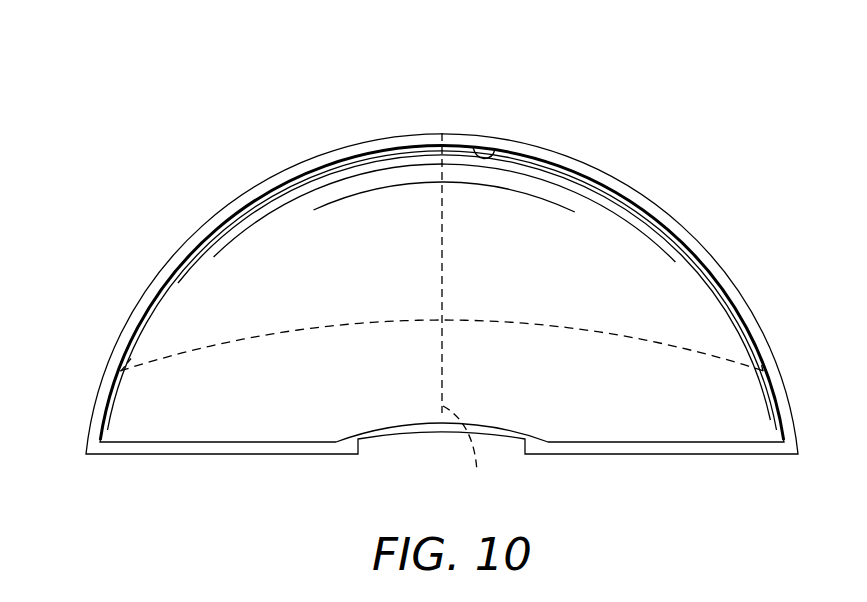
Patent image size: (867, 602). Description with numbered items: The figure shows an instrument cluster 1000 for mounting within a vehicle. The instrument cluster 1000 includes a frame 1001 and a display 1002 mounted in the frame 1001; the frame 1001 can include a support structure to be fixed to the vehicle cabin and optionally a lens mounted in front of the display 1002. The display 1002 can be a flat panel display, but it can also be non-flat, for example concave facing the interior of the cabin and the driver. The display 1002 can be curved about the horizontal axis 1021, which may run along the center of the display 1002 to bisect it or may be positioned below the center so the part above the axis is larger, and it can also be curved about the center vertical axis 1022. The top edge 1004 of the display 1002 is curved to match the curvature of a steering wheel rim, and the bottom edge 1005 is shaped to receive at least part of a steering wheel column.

The instrument cluster 1000 is at (733, 92).
The frame 1001 is at (91, 412).
The display 1002 is at (293, 170).
The top edge 1004 is at (498, 149).
The bottom edge 1005 is at (421, 427).
The horizontal axis 1021 is at (128, 343).
The center vertical axis 1022 is at (473, 454).